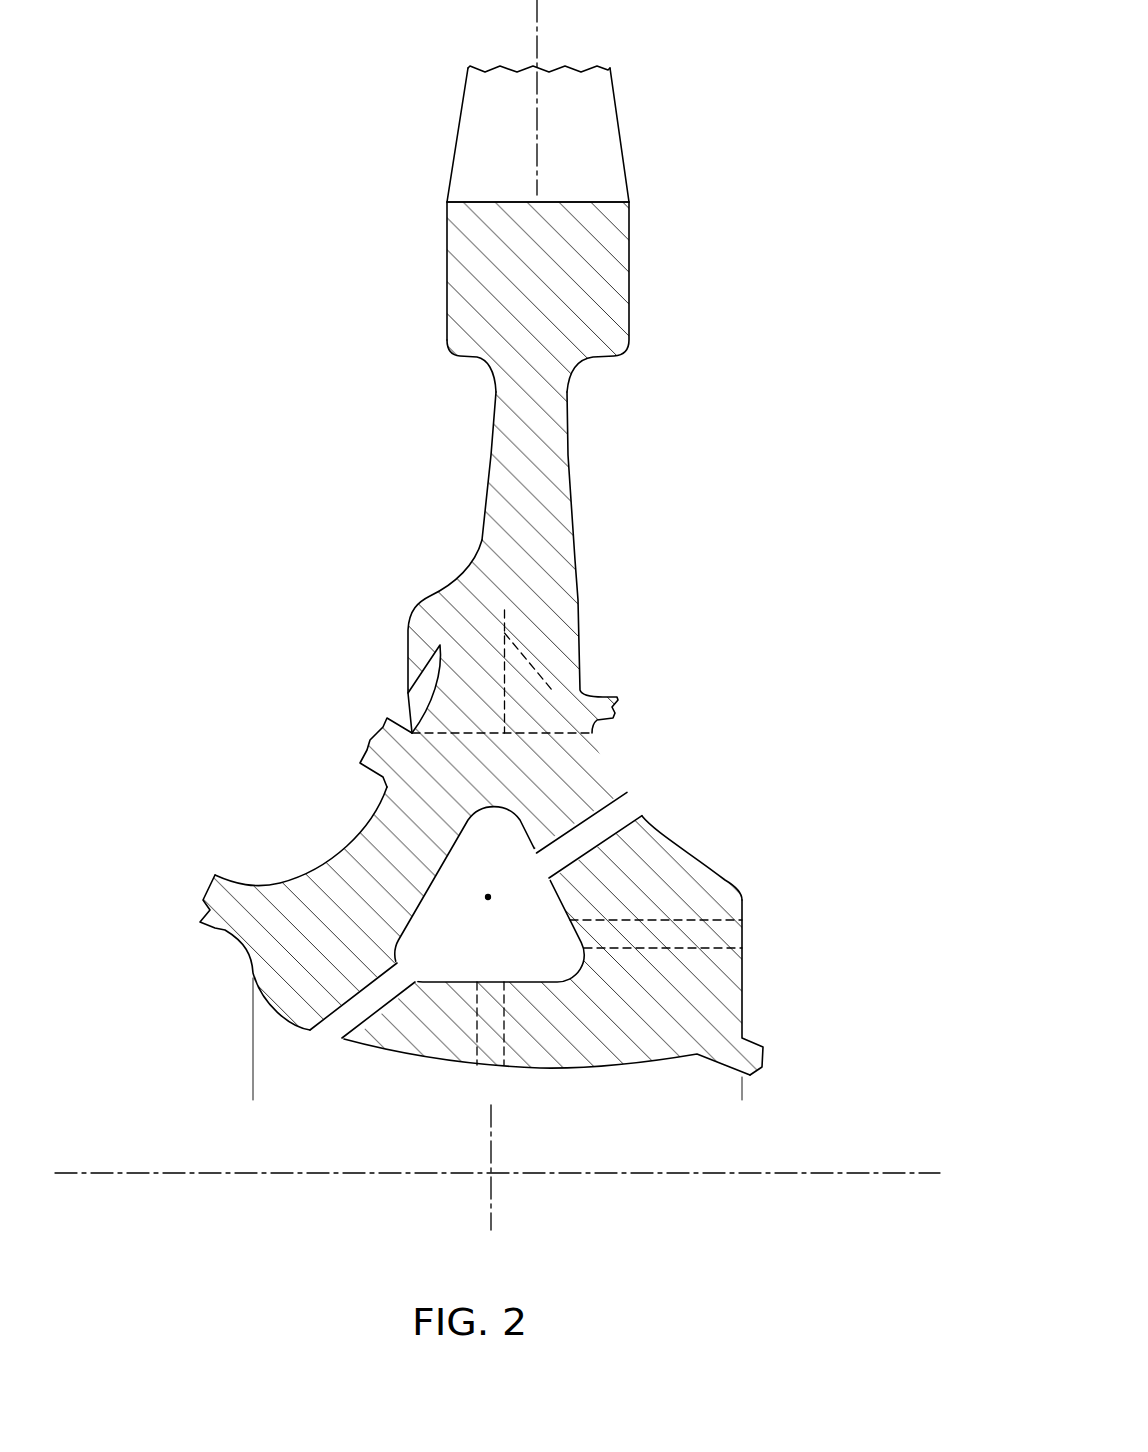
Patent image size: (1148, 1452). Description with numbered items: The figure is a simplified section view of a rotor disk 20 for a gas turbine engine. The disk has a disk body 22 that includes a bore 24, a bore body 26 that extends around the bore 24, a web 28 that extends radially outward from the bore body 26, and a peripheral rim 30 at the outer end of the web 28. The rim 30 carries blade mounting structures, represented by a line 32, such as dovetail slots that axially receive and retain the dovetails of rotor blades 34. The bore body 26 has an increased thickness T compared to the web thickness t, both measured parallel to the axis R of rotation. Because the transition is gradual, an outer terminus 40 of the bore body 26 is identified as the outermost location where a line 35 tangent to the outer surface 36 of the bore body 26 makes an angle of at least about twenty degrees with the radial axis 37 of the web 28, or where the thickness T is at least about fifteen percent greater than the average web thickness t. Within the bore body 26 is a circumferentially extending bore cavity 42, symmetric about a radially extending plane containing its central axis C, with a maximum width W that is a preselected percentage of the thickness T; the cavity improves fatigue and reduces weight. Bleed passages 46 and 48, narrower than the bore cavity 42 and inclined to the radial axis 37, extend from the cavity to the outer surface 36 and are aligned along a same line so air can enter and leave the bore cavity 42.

The rotor disk 20 is at (513, 638).
The disk body 22 is at (396, 607).
The bore 24 is at (452, 922).
The bore body 26 is at (668, 862).
The web 28 is at (570, 583).
The peripheral rim 30 is at (467, 310).
The blade mounting structures 32 is at (472, 203).
The rotor blades 34 is at (597, 135).
The line tangent to outer surface 35 is at (531, 665).
The outer surface 36 is at (723, 880).
The radial axis 37 is at (537, 25).
The outer terminus 40 is at (412, 733).
The bore cavity 42 is at (326, 837).
The bleed passage 46 is at (533, 1093).
The bleed passage 48 is at (774, 963).
The central axis of bore cavity C is at (490, 893).
The maximum width of bore cavity W is at (397, 952).
The maximum thickness of bore body T is at (742, 1093).
The web thickness t is at (491, 455).
The axis of rotation R is at (821, 1173).